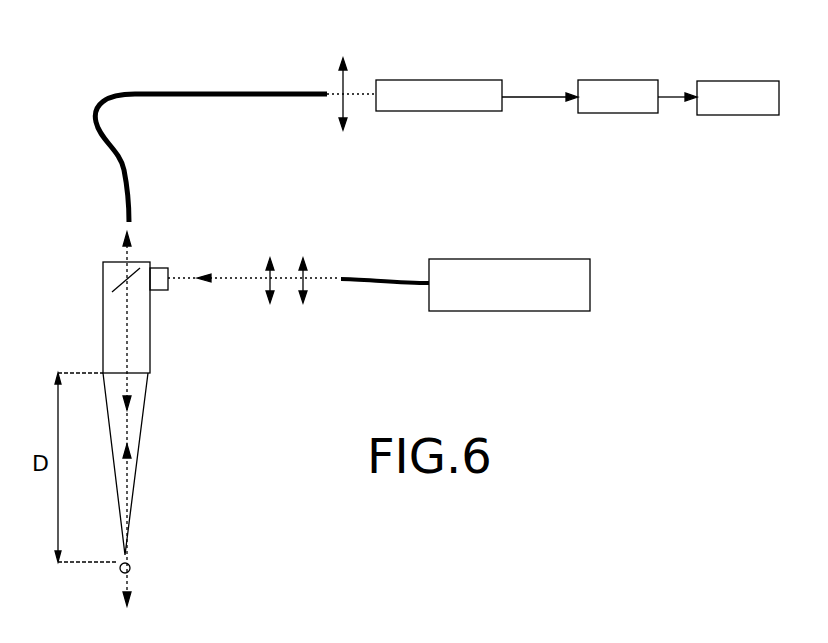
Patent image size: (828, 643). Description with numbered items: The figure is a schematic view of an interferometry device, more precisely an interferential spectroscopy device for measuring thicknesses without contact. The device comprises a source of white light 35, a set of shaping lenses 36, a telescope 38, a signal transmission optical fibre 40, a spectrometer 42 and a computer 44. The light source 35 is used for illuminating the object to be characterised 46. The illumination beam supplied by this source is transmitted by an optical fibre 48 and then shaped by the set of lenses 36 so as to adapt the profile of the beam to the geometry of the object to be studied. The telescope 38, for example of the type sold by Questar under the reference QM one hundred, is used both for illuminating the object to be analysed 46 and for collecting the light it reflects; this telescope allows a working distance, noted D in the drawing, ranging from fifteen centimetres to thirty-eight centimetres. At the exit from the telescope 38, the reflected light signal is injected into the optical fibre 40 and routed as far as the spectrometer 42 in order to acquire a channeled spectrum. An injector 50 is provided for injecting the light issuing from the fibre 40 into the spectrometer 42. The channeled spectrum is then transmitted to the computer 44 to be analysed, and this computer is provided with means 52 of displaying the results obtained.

The source of white light 35 is at (567, 268).
The set of shaping lenses 36 is at (266, 272).
The telescope 38 is at (140, 352).
The signal transmission optical fibre 40 is at (103, 100).
The spectrometer 42 is at (440, 84).
The computer 44 is at (625, 85).
The object to be characterised 46 is at (131, 568).
The optical fibre 48 is at (390, 278).
The injector 50 is at (343, 78).
The means of displaying 52 is at (748, 85).